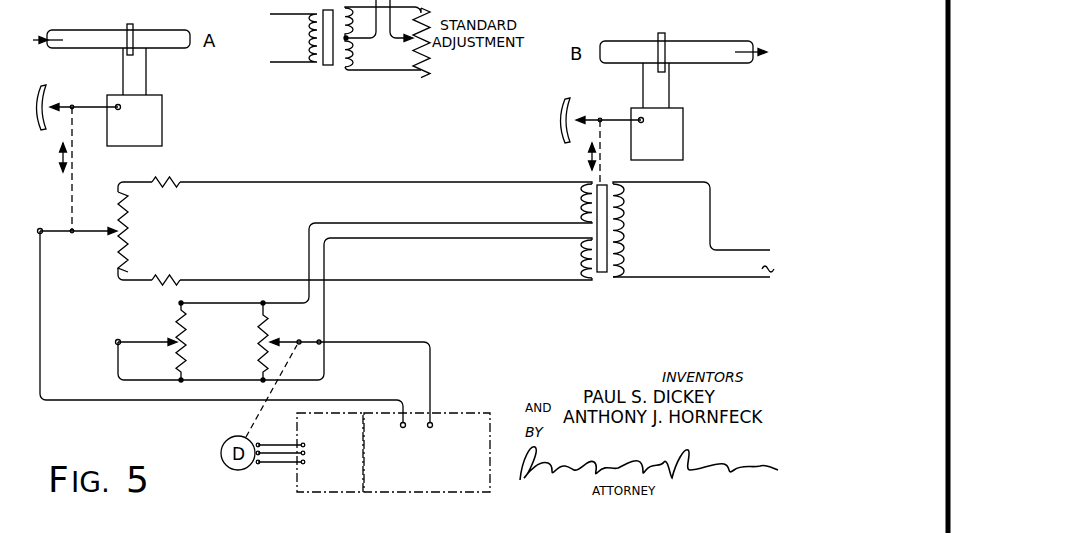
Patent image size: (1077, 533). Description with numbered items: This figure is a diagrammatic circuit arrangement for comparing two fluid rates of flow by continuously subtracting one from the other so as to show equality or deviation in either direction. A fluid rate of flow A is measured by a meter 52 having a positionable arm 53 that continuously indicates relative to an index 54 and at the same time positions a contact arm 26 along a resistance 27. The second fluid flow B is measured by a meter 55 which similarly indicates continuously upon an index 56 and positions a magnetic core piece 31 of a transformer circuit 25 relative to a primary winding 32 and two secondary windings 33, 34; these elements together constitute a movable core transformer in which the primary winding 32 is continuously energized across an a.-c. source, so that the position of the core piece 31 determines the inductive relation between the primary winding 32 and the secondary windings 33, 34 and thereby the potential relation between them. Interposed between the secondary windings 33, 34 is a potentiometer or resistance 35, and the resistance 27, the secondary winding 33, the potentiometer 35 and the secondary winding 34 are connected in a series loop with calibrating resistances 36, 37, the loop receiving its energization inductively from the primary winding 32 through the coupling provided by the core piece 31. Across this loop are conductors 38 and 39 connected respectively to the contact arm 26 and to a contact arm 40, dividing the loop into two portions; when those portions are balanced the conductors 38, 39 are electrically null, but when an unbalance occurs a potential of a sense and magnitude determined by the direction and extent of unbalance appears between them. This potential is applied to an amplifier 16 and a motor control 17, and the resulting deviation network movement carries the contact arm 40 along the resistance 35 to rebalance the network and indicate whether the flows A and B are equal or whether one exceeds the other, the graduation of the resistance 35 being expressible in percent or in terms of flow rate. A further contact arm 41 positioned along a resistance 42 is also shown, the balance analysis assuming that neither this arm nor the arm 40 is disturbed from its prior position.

The amplifier 16 is at (427, 452).
The motor control 17 is at (330, 452).
The transformer circuit 25 is at (400, 169).
The contact arm 26 is at (90, 233).
The resistance 27 is at (128, 240).
The magnetic core piece 31 is at (603, 274).
The primary winding 32 is at (693, 229).
The secondary winding 33 is at (574, 203).
The secondary winding 34 is at (574, 259).
The potentiometer 35 is at (267, 331).
The calibrating resistance 36 is at (167, 193).
The calibrating resistance 37 is at (167, 269).
The conductor 38 is at (368, 398).
The conductor 39 is at (433, 370).
The contact arm 40 is at (300, 346).
The contact arm 41 is at (147, 340).
The resistance 42 is at (194, 341).
The meter 52 is at (134, 120).
The positionable arm 53 is at (86, 106).
The index 54 is at (44, 132).
The meter 55 is at (657, 134).
The index 56 is at (557, 104).